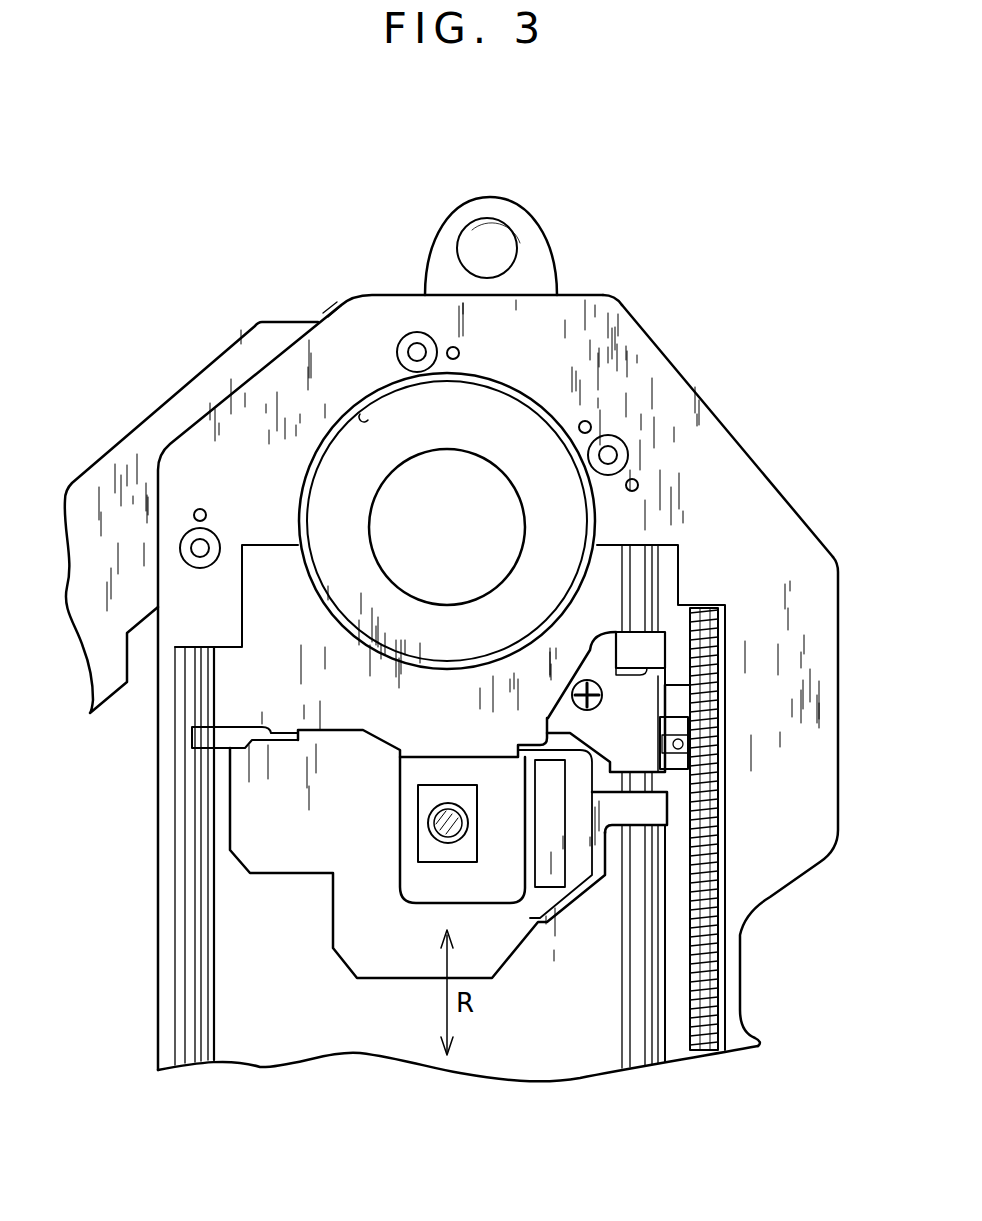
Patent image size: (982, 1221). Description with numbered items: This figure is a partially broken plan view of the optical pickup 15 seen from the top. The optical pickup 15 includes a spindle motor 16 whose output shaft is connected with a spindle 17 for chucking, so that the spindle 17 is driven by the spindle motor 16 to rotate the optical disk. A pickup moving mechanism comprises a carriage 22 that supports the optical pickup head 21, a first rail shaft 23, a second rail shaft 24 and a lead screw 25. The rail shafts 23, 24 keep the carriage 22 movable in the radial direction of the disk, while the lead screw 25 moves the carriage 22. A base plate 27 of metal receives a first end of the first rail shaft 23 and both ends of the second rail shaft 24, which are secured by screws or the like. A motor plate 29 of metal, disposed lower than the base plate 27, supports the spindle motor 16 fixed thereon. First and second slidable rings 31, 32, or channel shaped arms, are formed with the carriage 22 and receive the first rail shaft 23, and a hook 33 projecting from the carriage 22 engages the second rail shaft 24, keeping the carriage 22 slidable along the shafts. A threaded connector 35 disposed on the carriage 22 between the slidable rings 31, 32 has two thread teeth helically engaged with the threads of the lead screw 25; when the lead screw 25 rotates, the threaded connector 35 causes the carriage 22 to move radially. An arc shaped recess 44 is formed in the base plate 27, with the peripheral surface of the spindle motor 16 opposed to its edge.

The optical pickup 15 is at (615, 232).
The spindle motor 16 is at (502, 423).
The spindle 17 is at (403, 557).
The optical pickup head 21 is at (418, 822).
The carriage 22 is at (393, 963).
The first rail shaft 23 is at (635, 1043).
The second rail shaft 24 is at (192, 913).
The lead screw 25 is at (712, 898).
The base plate 27 is at (707, 418).
The motor plate 29 is at (175, 407).
The first slidable ring 31 is at (650, 643).
The second slidable ring 32 is at (652, 807).
The hook 33 is at (228, 727).
The threaded connector 35 is at (638, 697).
The arc shaped recess 44 is at (360, 418).